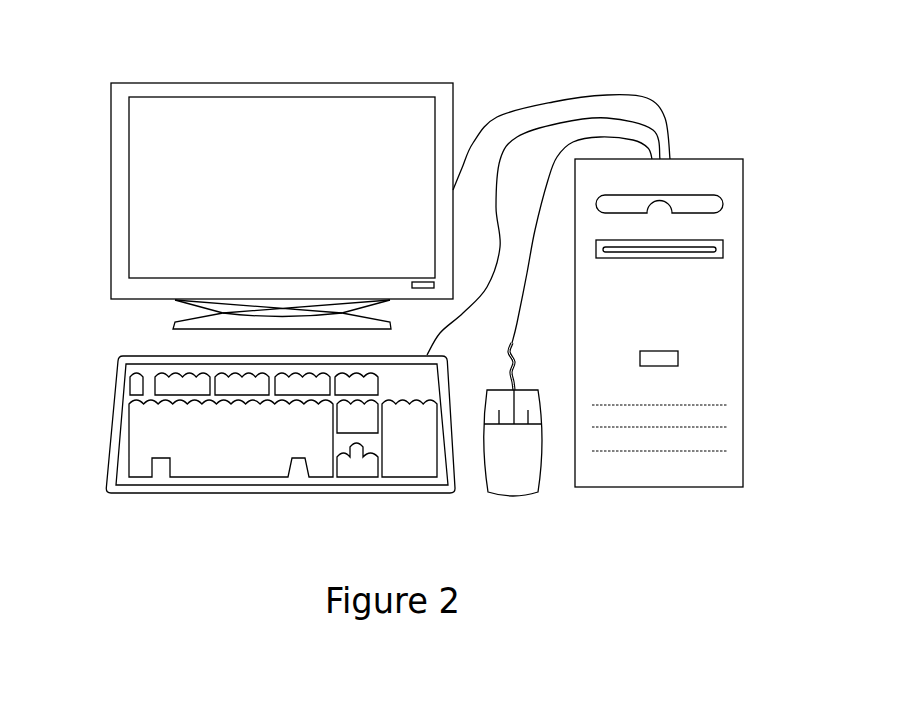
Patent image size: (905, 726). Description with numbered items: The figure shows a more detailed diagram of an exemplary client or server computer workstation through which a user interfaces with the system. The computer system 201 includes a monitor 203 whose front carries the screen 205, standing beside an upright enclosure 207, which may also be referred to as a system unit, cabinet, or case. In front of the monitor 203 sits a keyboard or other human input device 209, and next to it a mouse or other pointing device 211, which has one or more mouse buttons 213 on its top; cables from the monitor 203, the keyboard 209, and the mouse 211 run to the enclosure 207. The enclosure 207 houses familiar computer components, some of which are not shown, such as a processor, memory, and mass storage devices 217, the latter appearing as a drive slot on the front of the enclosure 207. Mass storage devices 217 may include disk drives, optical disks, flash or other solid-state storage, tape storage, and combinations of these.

The computer system 201 is at (486, 50).
The monitor 203 is at (275, 83).
The screen 205 is at (153, 187).
The enclosure 207 is at (743, 355).
The keyboard 209 is at (112, 417).
The mouse 211 is at (500, 477).
The mouse buttons 213 is at (502, 427).
The mass storage devices 217 is at (715, 195).